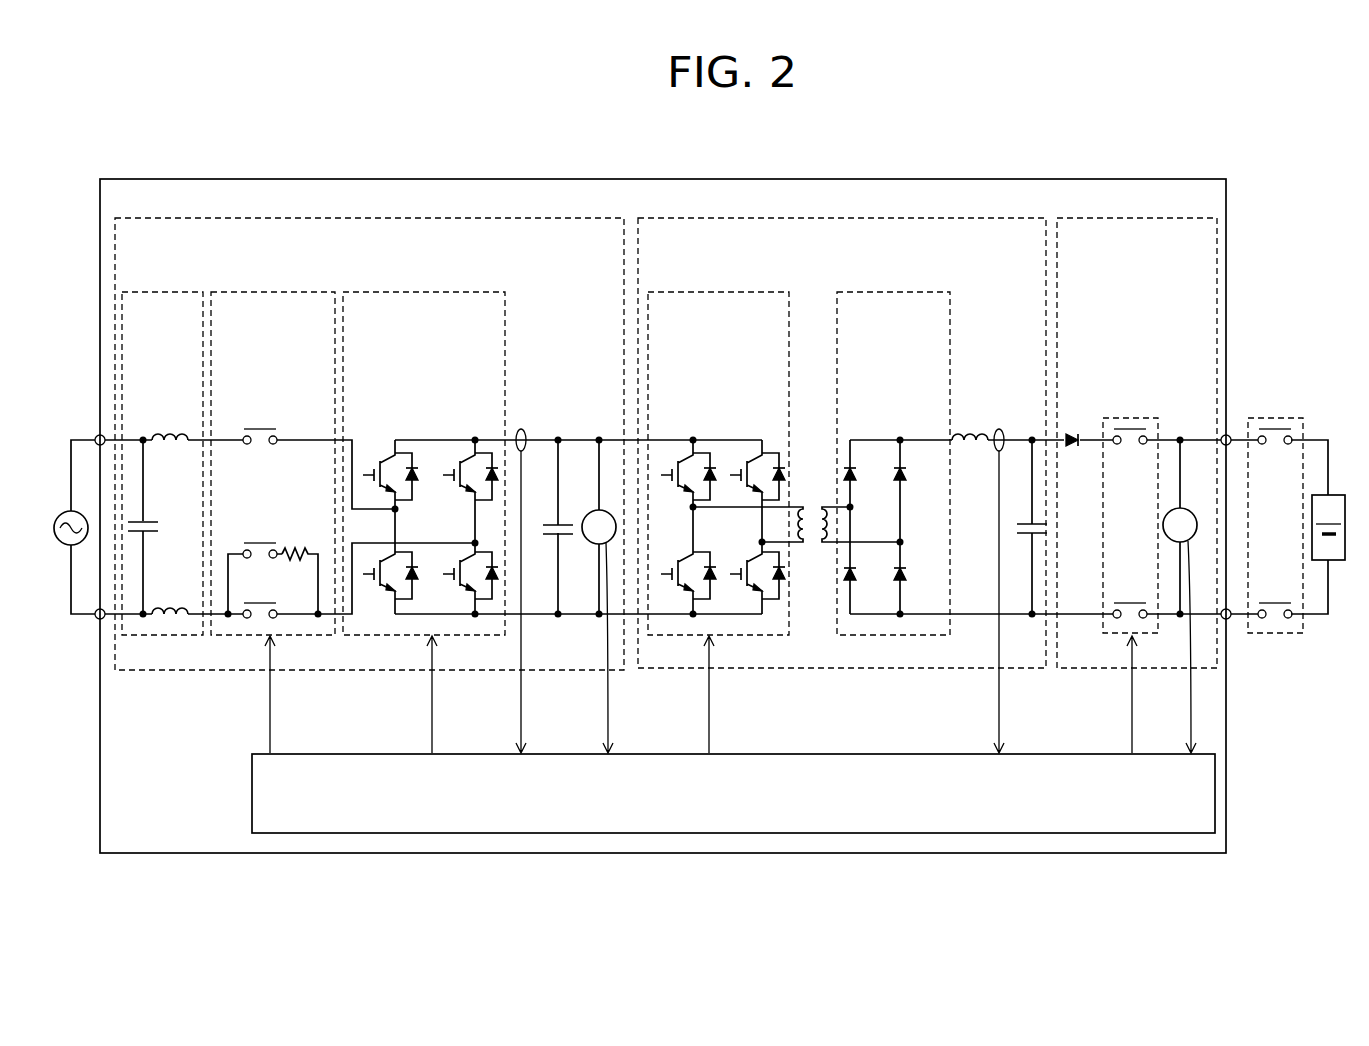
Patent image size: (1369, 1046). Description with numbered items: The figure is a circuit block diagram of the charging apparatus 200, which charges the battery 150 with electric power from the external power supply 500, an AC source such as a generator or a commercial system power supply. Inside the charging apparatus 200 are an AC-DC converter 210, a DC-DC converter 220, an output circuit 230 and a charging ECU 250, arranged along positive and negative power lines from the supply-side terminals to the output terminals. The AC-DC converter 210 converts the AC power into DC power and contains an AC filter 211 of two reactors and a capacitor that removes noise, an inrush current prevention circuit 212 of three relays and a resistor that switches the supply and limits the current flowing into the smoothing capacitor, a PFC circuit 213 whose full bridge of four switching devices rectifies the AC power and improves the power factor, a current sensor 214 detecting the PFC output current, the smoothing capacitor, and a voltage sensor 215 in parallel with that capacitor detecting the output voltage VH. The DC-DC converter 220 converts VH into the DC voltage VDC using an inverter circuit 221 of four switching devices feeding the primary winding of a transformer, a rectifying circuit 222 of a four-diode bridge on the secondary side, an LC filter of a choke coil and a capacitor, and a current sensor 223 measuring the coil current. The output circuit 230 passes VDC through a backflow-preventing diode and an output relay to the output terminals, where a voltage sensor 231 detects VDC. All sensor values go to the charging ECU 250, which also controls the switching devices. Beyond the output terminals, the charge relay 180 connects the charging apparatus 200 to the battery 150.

The charging apparatus 200 is at (1134, 180).
The AC-DC converter 210 is at (552, 219).
The AC filter 211 is at (166, 292).
The inrush current prevention circuit 212 is at (269, 292).
The power factor correction (PFC) circuit 213 is at (477, 292).
The current sensor 214 is at (521, 427).
The voltage sensor 215 is at (596, 545).
The DC-DC converter 220 is at (987, 218).
The inverter circuit 221 is at (742, 292).
The rectifying circuit 222 is at (892, 292).
The current sensor 223 is at (1002, 427).
The output circuit 230 is at (1159, 218).
The voltage sensor 231 is at (1188, 511).
The charging electronic control unit (ECU) 250 is at (1036, 755).
The battery 150 is at (1333, 493).
The charge relay (CHR) 180 is at (1280, 634).
The external power supply 500 is at (60, 508).